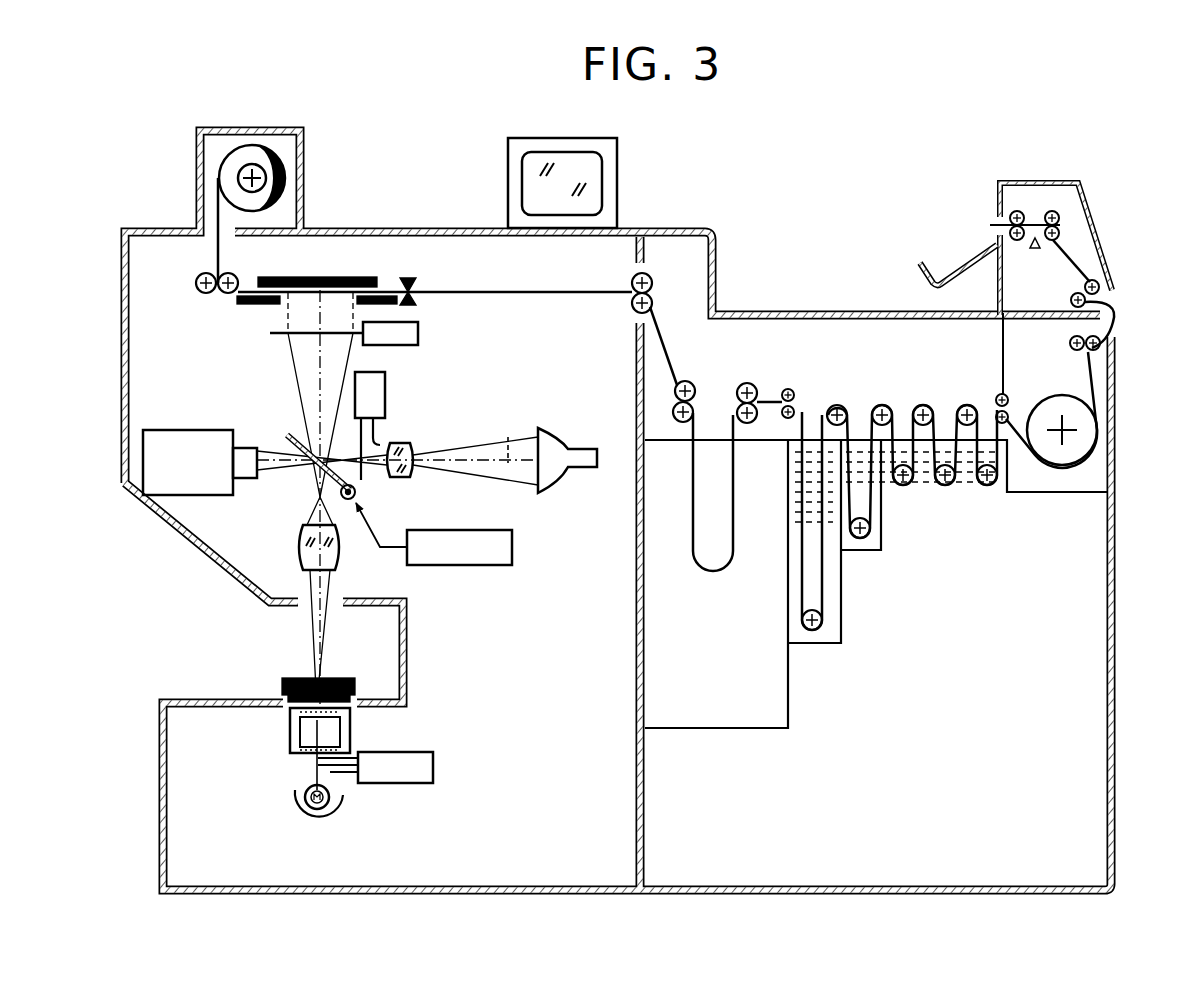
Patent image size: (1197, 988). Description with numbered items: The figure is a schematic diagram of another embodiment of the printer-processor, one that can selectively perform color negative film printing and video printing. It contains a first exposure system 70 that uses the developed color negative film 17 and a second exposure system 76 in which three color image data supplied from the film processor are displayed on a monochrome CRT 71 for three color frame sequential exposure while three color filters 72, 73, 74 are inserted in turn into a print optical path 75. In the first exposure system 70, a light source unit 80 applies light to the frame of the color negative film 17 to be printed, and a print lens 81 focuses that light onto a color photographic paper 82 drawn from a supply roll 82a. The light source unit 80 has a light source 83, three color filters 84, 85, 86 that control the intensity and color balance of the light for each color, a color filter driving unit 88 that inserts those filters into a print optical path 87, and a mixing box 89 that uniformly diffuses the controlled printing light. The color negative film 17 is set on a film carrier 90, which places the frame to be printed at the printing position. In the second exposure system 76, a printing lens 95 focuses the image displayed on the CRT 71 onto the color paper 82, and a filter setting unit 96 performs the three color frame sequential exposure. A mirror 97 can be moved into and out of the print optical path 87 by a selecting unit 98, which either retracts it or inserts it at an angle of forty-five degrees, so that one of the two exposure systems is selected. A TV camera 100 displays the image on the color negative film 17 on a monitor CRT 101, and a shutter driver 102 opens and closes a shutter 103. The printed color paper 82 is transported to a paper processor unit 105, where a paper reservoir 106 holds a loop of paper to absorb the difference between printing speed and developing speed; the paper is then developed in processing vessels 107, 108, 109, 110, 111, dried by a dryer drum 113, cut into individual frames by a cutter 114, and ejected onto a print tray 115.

The color negative film 17 is at (283, 686).
The first exposure system 70 is at (360, 562).
The monochrome CRT 71 is at (565, 450).
The color filter 72 is at (362, 476).
The color filter 73 is at (398, 448).
The color filter 74 is at (381, 440).
The print optical path 75 is at (508, 437).
The second exposure system 76 is at (478, 425).
The light source unit 80 is at (288, 764).
The print lens 81 is at (298, 548).
The color photographic paper 82 is at (297, 298).
The film supply roll 82a is at (238, 178).
The light source 83 is at (342, 800).
The color filter 84 is at (350, 753).
The color filter 85 is at (347, 775).
The color filter 86 is at (332, 778).
The print optical path 87 is at (318, 642).
The color filter driving unit 88 is at (433, 768).
The mixing box 89 is at (290, 732).
The film carrier 90 is at (358, 694).
The printing lens 95 is at (410, 477).
The filter setting unit 96 is at (386, 392).
The mirror 97 is at (288, 432).
The selecting unit 98 is at (512, 548).
The TV camera 100 is at (143, 460).
The monitor CRT 101 is at (597, 171).
The shutter driver 102 is at (418, 333).
The shutter 103 is at (270, 334).
The paper processor unit 105 is at (786, 353).
The paper reservoir 106 is at (761, 718).
The processing vessel 107 is at (828, 633).
The processing vessel 108 is at (873, 540).
The processing vessel 109 is at (906, 495).
The processing vessel 110 is at (955, 494).
The processing vessel 111 is at (1000, 494).
The dryer drum 113 is at (1085, 437).
The cutter 114 is at (1033, 222).
The print tray 115 is at (925, 262).